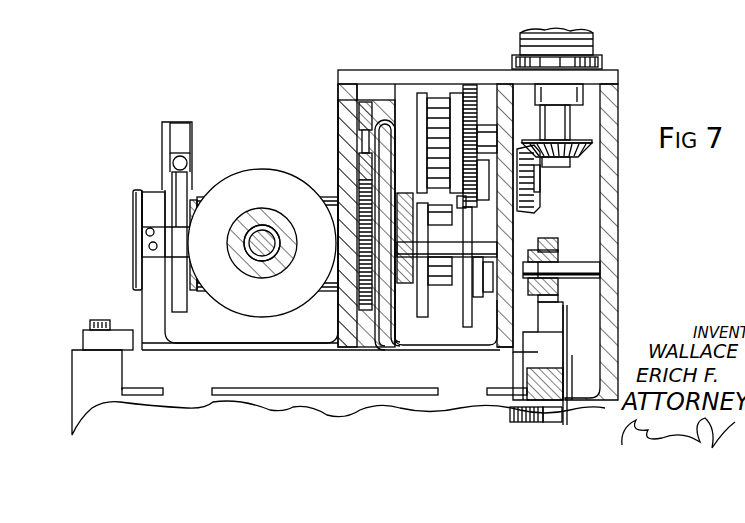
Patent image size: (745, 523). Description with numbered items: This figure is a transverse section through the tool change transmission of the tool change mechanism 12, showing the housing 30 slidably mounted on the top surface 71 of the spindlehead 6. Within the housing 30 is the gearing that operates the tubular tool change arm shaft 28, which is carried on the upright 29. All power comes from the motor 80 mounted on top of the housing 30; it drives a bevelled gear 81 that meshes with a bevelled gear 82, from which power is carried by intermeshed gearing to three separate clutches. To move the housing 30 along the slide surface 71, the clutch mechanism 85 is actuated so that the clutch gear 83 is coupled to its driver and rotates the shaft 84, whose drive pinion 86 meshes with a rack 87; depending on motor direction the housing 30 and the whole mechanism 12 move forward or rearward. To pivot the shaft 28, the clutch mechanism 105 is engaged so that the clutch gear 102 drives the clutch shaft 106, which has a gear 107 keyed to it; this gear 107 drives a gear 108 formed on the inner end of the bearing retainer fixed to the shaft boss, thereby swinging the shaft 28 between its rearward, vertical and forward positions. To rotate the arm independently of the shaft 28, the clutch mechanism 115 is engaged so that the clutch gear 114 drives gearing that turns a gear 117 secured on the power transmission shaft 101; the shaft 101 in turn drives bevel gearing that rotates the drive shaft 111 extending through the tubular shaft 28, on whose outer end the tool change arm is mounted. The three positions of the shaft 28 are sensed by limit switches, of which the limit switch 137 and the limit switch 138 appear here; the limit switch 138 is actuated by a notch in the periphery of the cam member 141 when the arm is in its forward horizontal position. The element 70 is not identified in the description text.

The spindlehead 6 is at (100, 410).
The tool change mechanism 12 is at (332, 156).
The tool change arm shaft 28 is at (282, 217).
The upright 29 is at (152, 300).
The housing 30 is at (620, 105).
The plate 70 is at (253, 375).
The top surface 71 is at (170, 389).
The motor 80 is at (527, 35).
The bevelled gear 81 is at (574, 162).
The bevelled gear 82 is at (547, 193).
The clutch gear 83 is at (464, 316).
The shaft 84 is at (586, 268).
The clutch mechanism 85 is at (430, 318).
The drive pinion 86 is at (557, 248).
The rack 87 is at (547, 317).
The power transmission shaft 101 is at (480, 243).
The clutch gear 102 is at (466, 86).
The clutch mechanism 105 is at (440, 90).
The clutch shaft 106 is at (403, 118).
The gear 107 is at (366, 100).
The gear 108 is at (360, 343).
The drive shaft 111 is at (262, 232).
The clutch gear 114 is at (490, 292).
The clutch mechanism 115 is at (462, 203).
The gear 117 is at (422, 298).
The limit switch 137 is at (178, 125).
The limit switch 138 is at (176, 240).
The cam member 141 is at (188, 170).